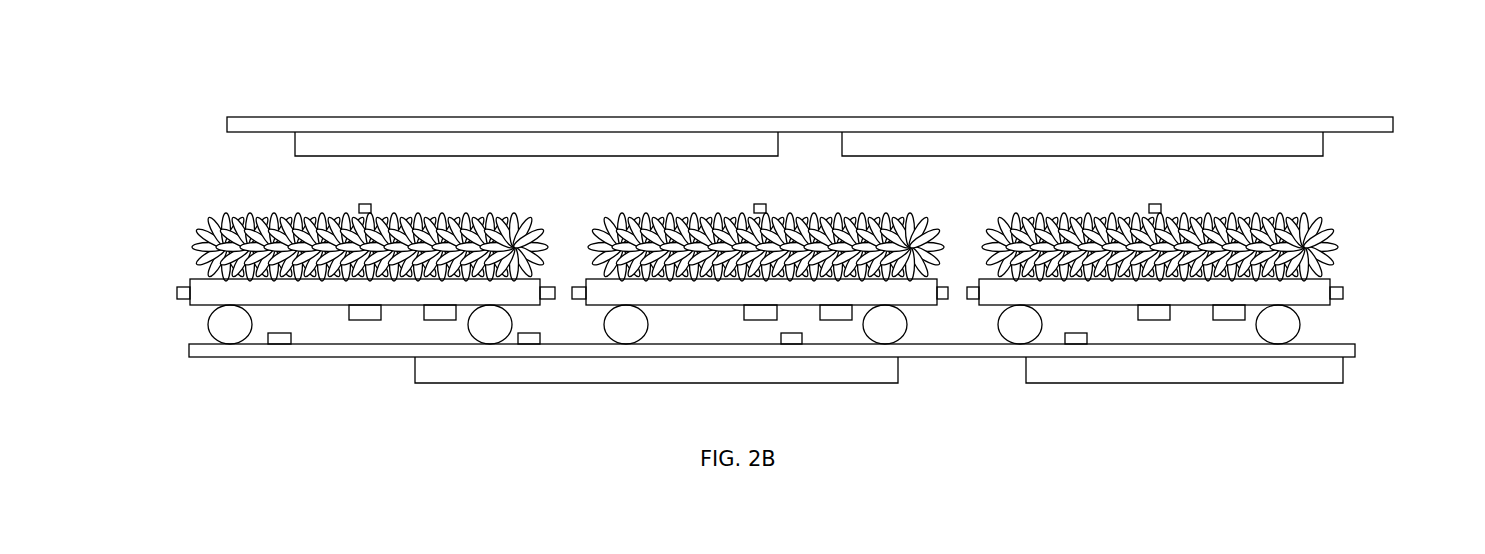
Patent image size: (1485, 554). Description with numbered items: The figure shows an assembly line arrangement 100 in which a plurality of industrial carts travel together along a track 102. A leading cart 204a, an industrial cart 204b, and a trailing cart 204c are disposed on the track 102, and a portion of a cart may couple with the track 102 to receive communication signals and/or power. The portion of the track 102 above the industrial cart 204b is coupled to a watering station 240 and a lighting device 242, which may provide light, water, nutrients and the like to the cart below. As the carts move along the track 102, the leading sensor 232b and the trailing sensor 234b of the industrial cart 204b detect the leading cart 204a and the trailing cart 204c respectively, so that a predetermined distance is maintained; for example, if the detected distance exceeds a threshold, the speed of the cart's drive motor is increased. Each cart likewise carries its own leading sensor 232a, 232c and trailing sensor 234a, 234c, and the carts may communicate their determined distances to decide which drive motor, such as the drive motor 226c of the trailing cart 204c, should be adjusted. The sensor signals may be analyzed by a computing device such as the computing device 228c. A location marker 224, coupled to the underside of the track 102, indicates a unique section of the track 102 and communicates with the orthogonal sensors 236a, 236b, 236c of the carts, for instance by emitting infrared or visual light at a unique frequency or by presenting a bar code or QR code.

The light emitting assembly 100 is at (1340, 90).
The track 102 is at (851, 114).
The watering station 240 is at (280, 151).
The lighting device 242 is at (1333, 153).
The leading cart 204a is at (525, 214).
The industrial cart 204b is at (920, 214).
The trailing cart 204c is at (1345, 246).
The orthogonal sensor 236a is at (377, 206).
The orthogonal sensor 236b is at (772, 206).
The orthogonal sensor 236c is at (1167, 206).
The trailing sensor 234a is at (556, 274).
The trailing sensor 234b is at (951, 274).
The trailing sensor 234c is at (1353, 300).
The leading sensor 232a is at (173, 308).
The leading sensor 232b is at (578, 312).
The leading sensor 232c is at (973, 312).
The location marker 224 is at (279, 344).
The computing device 228c is at (1156, 325).
The drive motor 226c is at (1228, 325).